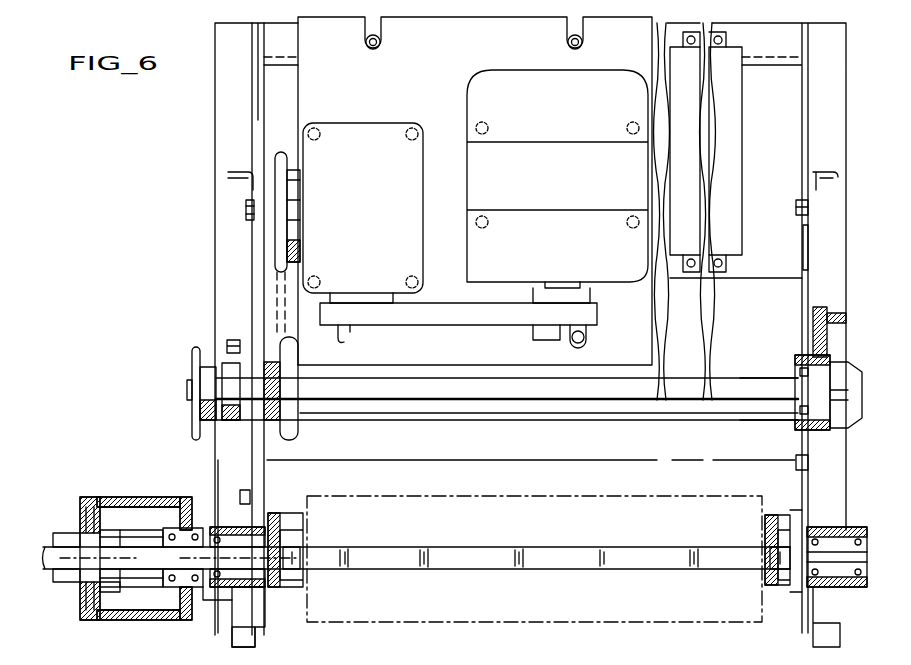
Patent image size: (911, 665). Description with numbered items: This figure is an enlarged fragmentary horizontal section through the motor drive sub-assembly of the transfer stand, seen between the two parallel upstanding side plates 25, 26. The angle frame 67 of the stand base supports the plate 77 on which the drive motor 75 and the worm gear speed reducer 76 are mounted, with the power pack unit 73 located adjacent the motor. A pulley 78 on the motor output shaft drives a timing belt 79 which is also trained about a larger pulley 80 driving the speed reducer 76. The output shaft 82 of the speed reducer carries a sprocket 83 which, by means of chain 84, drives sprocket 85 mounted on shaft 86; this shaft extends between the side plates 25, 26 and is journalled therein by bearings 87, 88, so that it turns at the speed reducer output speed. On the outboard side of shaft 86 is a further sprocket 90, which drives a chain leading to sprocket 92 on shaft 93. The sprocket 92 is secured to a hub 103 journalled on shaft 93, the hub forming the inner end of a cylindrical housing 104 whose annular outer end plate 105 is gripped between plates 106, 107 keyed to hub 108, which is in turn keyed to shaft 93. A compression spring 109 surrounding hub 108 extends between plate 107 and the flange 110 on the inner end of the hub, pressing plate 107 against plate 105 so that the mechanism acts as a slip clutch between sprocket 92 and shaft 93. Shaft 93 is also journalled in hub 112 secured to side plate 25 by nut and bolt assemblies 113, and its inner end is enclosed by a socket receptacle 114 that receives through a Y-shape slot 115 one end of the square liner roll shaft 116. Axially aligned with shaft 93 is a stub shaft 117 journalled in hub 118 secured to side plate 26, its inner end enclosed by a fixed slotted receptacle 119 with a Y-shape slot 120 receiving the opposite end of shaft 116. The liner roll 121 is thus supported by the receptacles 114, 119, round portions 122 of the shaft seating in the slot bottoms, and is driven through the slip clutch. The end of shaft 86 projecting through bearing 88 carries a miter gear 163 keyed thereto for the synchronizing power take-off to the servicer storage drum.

The side plate 25 is at (252, 302).
The side plate 26 is at (812, 288).
The angle frame 67 is at (586, 422).
The power pack unit 73 is at (733, 137).
The drive motor 75 is at (507, 86).
The worm gear speed reducer 76 is at (408, 243).
The plate 77 is at (462, 35).
The pulley 78 is at (538, 330).
The timing belt 79 is at (464, 316).
The pulley 80 is at (340, 331).
The output shaft 82 is at (262, 210).
The sprocket 83 is at (280, 172).
The chain 84 is at (284, 266).
The sprocket 85 is at (290, 428).
The shaft 86 is at (462, 400).
The bearing 87 is at (236, 428).
The bearing 88 is at (795, 374).
The sprocket 90 is at (195, 425).
The sprocket 92 is at (202, 602).
The shaft 93 is at (125, 553).
The hub 103 is at (180, 600).
The cylindrical housing 104 is at (148, 622).
The annular outer end plate 105 is at (92, 615).
The plate 106 is at (82, 604).
The plate 107 is at (114, 618).
The hub 108 is at (76, 534).
The compression spring 109 is at (112, 532).
The flange 110 is at (162, 532).
The hub 112 is at (200, 528).
The nut and bolt assemblies 113 is at (250, 526).
The socket receptacle 114 is at (262, 612).
The Y-shape slot 115 is at (300, 528).
The square liner roll shaft 116 is at (372, 570).
The stub shaft 117 is at (840, 628).
The hub 118 is at (845, 528).
The slotted receptacle 119 is at (766, 600).
The Y-shape slot 120 is at (770, 530).
The liner roll 121 is at (530, 620).
The round portions 122 is at (304, 565).
The miter gear 163 is at (848, 390).